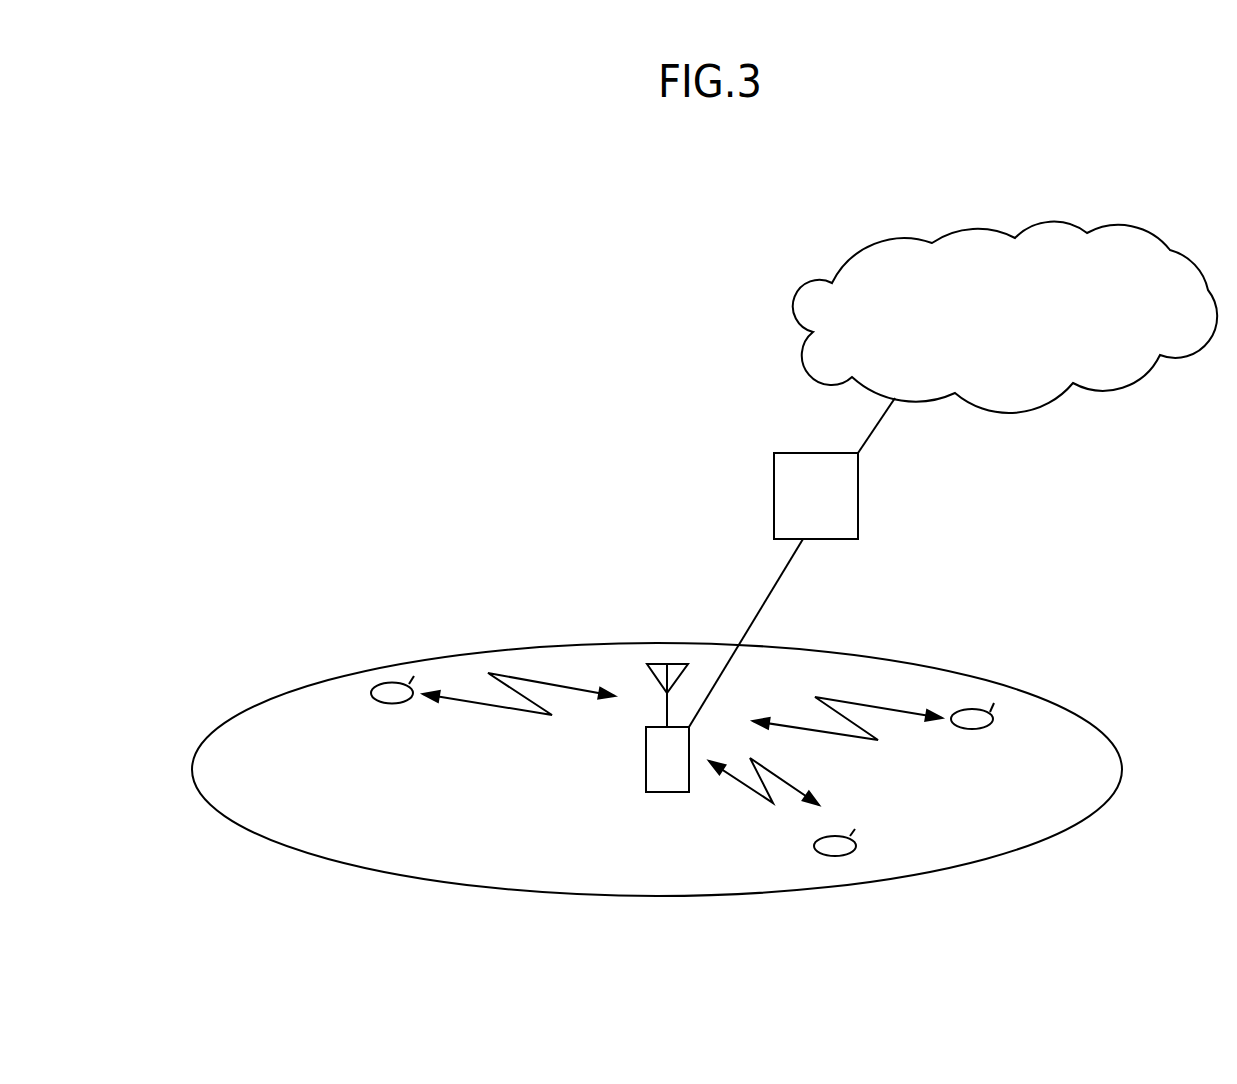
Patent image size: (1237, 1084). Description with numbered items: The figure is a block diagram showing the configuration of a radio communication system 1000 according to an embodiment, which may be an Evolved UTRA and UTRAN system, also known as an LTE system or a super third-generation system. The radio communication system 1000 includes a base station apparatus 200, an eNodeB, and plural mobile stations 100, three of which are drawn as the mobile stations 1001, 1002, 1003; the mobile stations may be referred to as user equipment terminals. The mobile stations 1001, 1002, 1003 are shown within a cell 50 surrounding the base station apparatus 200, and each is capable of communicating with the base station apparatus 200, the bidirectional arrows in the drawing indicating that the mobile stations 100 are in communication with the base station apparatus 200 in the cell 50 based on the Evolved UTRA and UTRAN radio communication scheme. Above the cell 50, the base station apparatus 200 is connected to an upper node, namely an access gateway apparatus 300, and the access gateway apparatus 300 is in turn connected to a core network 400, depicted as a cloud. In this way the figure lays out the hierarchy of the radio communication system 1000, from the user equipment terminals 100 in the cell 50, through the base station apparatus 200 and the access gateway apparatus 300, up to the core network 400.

The radio communication system 1000 is at (393, 262).
The core network 400 is at (1057, 223).
The access gateway apparatus 300 is at (858, 495).
The base station apparatus 200 is at (646, 765).
The cell 50 is at (950, 872).
The mobile station 100 is at (718, 768).
The mobile station 1001 is at (390, 704).
The mobile station 1002 is at (814, 846).
The mobile station 1003 is at (973, 730).